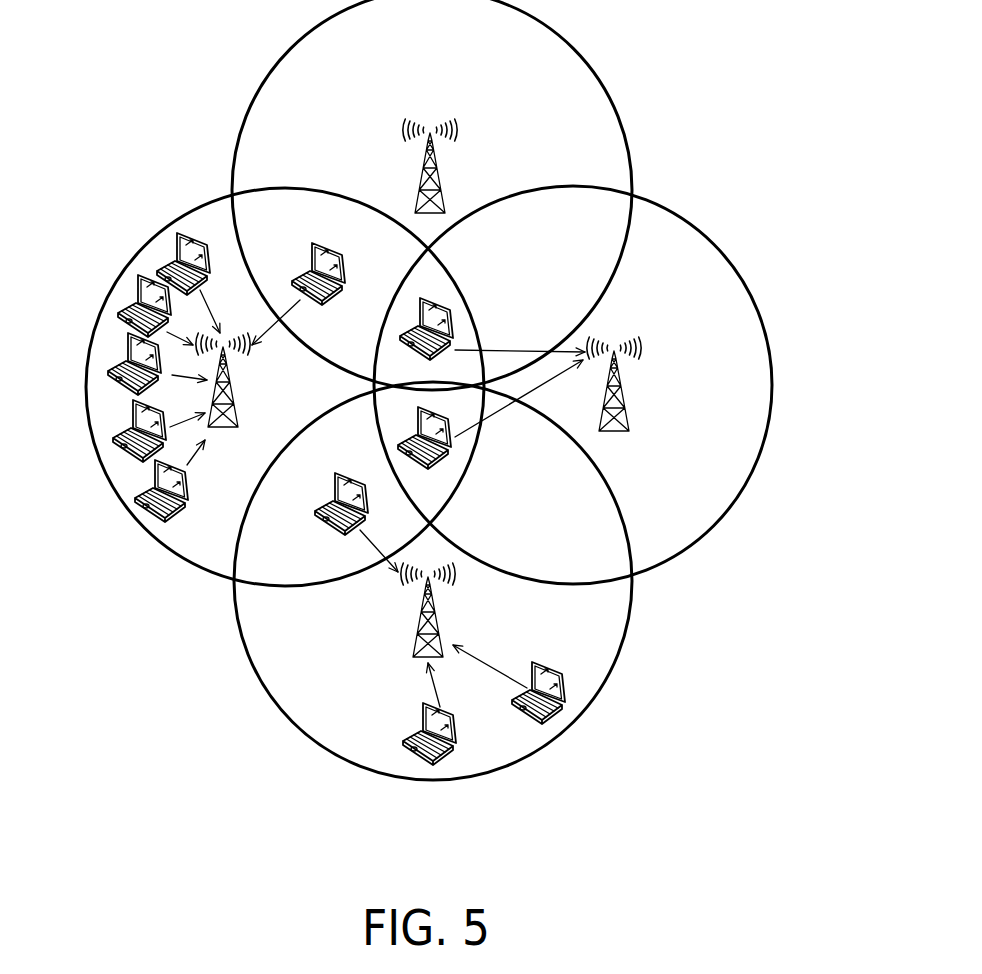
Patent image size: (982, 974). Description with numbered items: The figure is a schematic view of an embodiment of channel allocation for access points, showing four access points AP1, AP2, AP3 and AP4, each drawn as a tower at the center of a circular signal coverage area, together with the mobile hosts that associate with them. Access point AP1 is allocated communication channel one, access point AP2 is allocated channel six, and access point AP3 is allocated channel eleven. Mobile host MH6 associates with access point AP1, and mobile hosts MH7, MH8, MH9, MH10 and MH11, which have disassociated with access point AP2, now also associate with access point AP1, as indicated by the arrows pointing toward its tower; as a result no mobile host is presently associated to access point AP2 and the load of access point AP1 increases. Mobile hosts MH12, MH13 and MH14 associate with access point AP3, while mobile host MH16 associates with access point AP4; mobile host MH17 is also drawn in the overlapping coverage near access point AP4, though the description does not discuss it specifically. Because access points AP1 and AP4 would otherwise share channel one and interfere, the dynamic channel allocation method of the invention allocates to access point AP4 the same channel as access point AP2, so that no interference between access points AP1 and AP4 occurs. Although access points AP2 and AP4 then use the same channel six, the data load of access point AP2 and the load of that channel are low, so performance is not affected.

The access point AP1 is at (228, 430).
The access point AP2 is at (446, 200).
The access point AP3 is at (413, 641).
The access point AP4 is at (630, 418).
The mobile host MH6 is at (310, 248).
The mobile host MH7 is at (176, 238).
The mobile host MH8 is at (150, 280).
The mobile host MH9 is at (130, 335).
The mobile host MH10 is at (128, 402).
The mobile host MH11 is at (137, 497).
The mobile host MH12 is at (315, 512).
The mobile host MH13 is at (448, 757).
The mobile host MH14 is at (557, 713).
The mobile host MH16 is at (443, 460).
The mobile host 17 MH17 is at (453, 323).